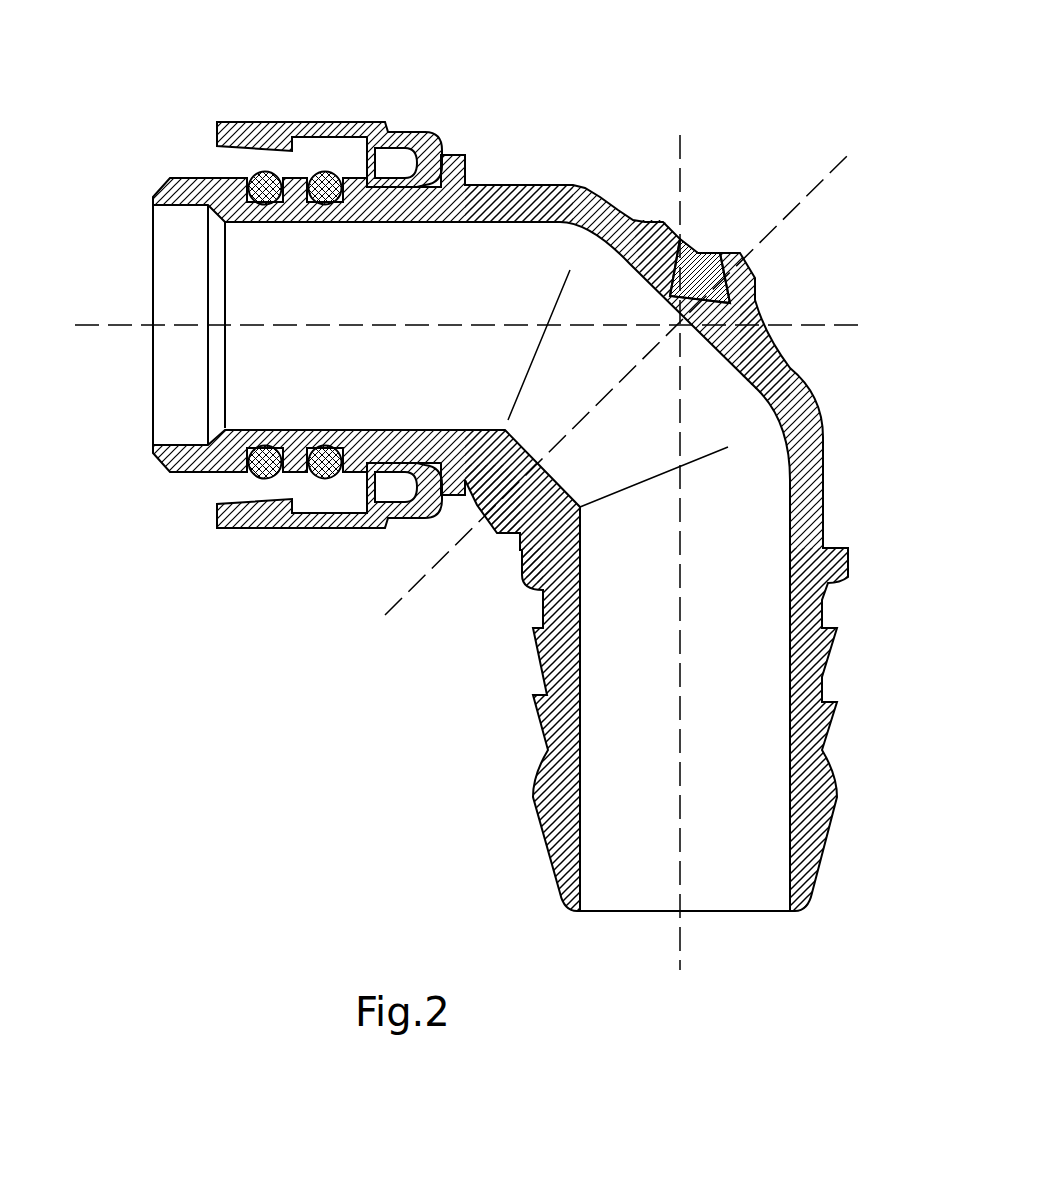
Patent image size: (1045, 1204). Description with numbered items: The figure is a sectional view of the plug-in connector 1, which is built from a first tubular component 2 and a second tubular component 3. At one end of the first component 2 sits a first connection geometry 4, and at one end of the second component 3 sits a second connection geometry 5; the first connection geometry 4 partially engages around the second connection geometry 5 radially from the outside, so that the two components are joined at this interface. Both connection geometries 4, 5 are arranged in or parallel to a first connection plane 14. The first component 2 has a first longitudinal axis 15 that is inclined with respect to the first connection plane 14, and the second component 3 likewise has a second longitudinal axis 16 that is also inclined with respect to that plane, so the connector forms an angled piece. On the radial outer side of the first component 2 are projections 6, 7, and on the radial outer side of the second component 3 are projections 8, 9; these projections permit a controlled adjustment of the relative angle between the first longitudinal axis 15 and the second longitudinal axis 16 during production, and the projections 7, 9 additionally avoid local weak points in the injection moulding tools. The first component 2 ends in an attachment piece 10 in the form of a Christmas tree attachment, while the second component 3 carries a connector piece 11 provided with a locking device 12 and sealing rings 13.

The plug-in connector 1 is at (508, 455).
The first tubular component 2 is at (812, 507).
The second tubular component 3 is at (490, 200).
The first connection geometry 4 is at (770, 279).
The second connection geometry 5 is at (706, 238).
The projection 6 is at (765, 340).
The projection 7 is at (527, 540).
The projection 8 is at (653, 230).
The projection 9 is at (473, 483).
The attachment piece 10 is at (528, 760).
The connector piece 11 is at (271, 108).
The locking device 12 is at (263, 507).
The sealing rings 13 is at (253, 473).
The first connection plane 14 is at (800, 192).
The first longitudinal axis 15 is at (680, 932).
The second longitudinal axis 16 is at (110, 325).